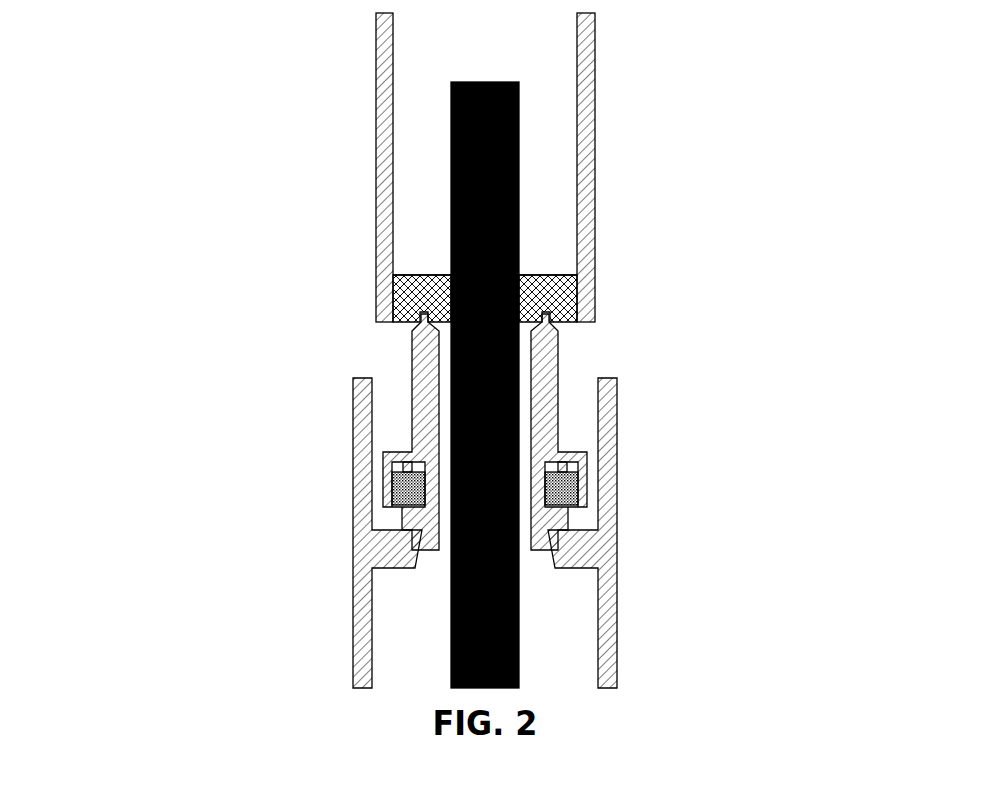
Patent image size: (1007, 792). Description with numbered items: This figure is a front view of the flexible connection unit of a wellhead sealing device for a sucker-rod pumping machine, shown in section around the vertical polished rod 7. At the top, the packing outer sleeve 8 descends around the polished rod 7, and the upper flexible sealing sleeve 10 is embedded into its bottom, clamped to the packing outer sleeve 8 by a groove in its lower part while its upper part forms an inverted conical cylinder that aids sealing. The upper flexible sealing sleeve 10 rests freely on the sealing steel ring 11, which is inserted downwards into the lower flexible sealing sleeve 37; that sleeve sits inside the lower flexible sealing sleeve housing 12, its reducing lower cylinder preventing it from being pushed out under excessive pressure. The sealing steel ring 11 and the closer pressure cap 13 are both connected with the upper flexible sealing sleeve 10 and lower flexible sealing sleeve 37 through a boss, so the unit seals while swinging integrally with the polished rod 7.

The polished rod 7 is at (451, 107).
The packing outer sleeve 8 is at (376, 168).
The upper flexible sealing sleeve 10 is at (395, 298).
The sealing steel ring 11 is at (412, 390).
The lower flexible sealing sleeve housing 12 is at (392, 472).
The closer pressure cap 13 is at (372, 553).
The lower flexible sealing sleeve 37 is at (578, 496).